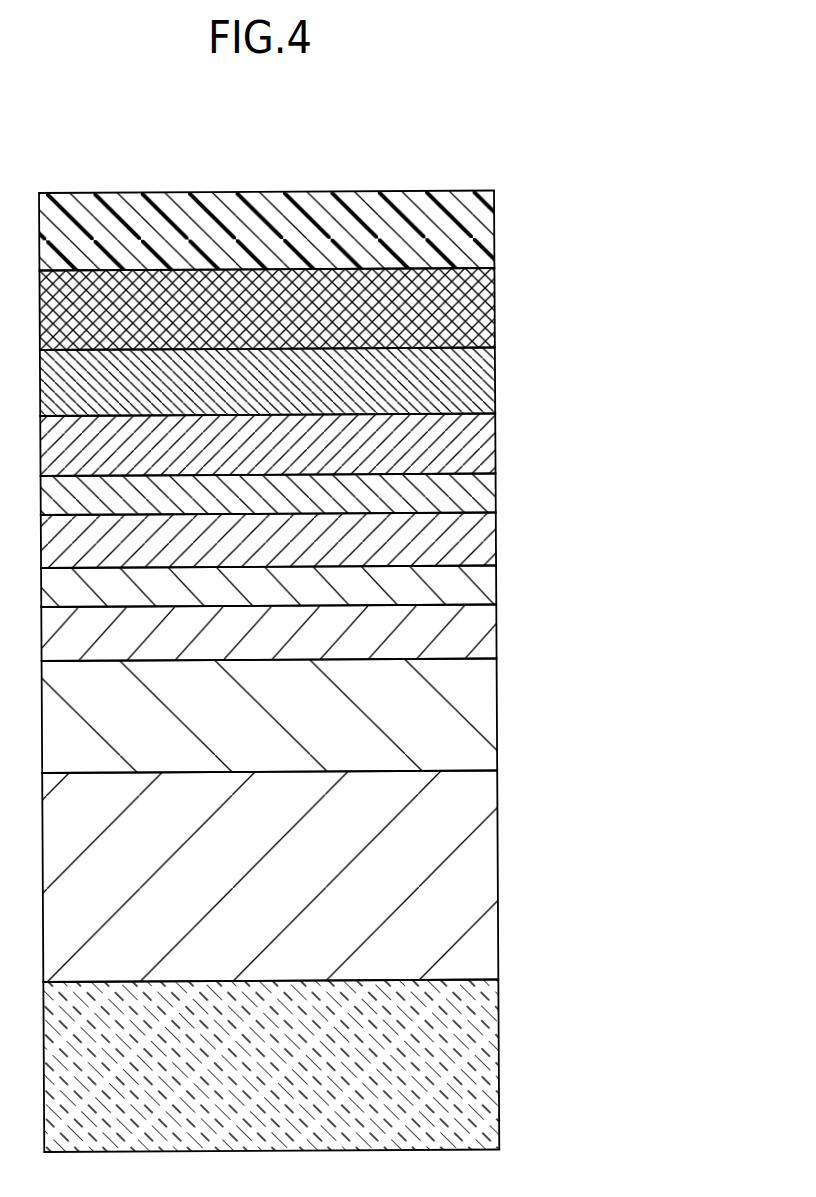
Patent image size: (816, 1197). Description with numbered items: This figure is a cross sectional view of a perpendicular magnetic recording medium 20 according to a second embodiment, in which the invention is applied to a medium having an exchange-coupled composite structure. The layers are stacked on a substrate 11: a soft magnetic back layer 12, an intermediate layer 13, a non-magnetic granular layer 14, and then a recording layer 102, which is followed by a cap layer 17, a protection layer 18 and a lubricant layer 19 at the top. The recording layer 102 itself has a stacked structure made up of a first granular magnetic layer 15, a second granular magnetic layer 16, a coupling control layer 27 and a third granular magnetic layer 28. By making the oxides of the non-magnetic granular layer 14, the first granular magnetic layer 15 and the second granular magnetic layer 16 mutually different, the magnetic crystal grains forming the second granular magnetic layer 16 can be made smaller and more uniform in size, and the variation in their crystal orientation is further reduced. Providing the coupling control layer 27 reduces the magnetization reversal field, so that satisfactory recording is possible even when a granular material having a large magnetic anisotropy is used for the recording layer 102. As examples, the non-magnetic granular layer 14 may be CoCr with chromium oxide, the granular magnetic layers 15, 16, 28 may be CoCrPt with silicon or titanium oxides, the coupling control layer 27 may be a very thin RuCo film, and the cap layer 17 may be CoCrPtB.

The perpendicular magnetic recording medium 20 is at (108, 118).
The substrate 11 is at (485, 1073).
The soft magnetic back layer 12 is at (480, 877).
The intermediate layer 13 is at (480, 718).
The non-magnetic granular layer 14 is at (480, 637).
The first granular magnetic layer 15 is at (327, 586).
The second granular magnetic layer 16 is at (477, 540).
The coupling control layer 27 is at (477, 492).
The third granular magnetic layer 28 is at (477, 438).
The recording layer 102 is at (371, 509).
The cap layer 17 is at (477, 375).
The protection layer 18 is at (477, 302).
The lubricant layer 19 is at (477, 229).